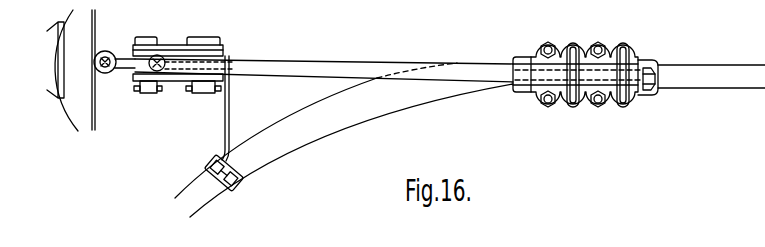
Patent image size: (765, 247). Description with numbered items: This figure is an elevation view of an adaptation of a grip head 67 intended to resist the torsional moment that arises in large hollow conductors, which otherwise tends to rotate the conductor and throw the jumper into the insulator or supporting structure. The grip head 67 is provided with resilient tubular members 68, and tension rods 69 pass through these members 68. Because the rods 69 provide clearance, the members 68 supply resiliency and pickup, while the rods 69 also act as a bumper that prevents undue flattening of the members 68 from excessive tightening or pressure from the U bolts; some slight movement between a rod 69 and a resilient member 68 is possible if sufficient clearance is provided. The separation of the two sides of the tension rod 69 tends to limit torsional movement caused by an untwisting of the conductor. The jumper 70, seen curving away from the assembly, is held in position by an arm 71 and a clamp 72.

The grip head 67 is at (558, 107).
The resilient tubular member 68 is at (528, 90).
The tension rod 69 is at (341, 63).
The jumper 70 is at (370, 103).
The arm 71 is at (226, 121).
The clamp 72 is at (232, 181).